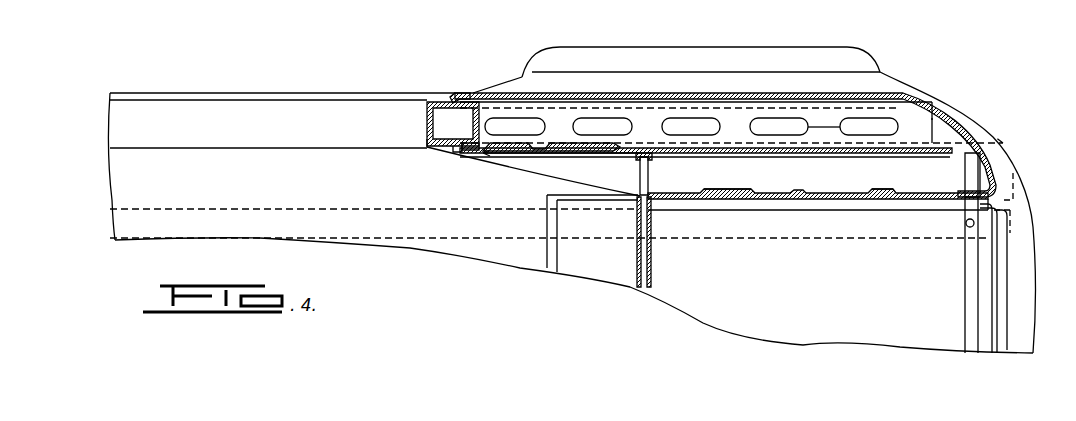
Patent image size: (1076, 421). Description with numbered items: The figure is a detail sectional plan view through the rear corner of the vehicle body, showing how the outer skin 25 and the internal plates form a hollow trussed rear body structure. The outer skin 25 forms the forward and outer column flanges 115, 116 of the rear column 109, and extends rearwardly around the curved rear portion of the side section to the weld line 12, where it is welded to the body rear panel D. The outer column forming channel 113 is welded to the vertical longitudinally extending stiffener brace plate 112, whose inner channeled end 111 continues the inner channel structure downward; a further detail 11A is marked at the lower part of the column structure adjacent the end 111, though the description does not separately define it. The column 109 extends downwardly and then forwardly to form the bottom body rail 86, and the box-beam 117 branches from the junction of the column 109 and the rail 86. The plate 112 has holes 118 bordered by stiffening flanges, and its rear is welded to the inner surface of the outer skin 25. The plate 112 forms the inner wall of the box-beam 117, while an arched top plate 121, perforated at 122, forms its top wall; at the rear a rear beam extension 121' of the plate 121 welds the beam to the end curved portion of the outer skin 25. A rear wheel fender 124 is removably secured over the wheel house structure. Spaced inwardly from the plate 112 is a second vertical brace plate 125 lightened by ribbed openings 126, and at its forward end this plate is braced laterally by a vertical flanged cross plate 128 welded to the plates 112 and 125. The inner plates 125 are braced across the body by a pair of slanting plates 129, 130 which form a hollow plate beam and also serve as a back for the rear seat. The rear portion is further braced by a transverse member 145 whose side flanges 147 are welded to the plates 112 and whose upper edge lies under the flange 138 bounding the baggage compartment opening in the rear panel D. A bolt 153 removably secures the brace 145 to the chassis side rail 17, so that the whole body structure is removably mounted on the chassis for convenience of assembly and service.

The bottom body rail 86 is at (243, 72).
The outer skin 25 is at (522, 76).
The rear wheel fender 124 is at (665, 18).
The outer column forming channel 113 is at (475, 96).
The outer column flange 116 is at (437, 101).
The forward column flange 115 is at (427, 118).
The rear column 109 is at (421, 149).
The inner channeled end 111 is at (441, 148).
The notch 11A is at (463, 150).
The holes 118 is at (513, 150).
The arched top plate 121 is at (731, 115).
The perforations 122 is at (583, 122).
The stiffener brace plate 112 is at (723, 143).
The box-beam 117 is at (822, 116).
The rear beam extension 121' is at (956, 95).
The weld line 12 is at (1020, 180).
The side flanges 147 is at (958, 153).
The vertical flanged cross plate 128 is at (638, 160).
The slanting plate 129 is at (637, 273).
The slanting plate 130 is at (645, 288).
The second vertical brace plate 125 is at (778, 200).
The ribbed openings 126 is at (737, 192).
The main side rail 17 is at (750, 238).
The bolt 153 is at (968, 228).
The transverse member 145 is at (975, 298).
The flange 138 is at (993, 320).
The body rear panel D is at (1020, 287).